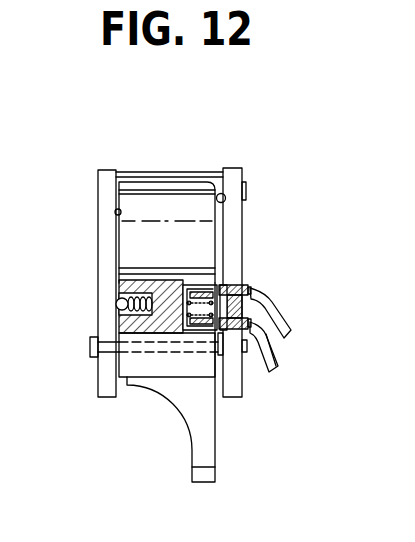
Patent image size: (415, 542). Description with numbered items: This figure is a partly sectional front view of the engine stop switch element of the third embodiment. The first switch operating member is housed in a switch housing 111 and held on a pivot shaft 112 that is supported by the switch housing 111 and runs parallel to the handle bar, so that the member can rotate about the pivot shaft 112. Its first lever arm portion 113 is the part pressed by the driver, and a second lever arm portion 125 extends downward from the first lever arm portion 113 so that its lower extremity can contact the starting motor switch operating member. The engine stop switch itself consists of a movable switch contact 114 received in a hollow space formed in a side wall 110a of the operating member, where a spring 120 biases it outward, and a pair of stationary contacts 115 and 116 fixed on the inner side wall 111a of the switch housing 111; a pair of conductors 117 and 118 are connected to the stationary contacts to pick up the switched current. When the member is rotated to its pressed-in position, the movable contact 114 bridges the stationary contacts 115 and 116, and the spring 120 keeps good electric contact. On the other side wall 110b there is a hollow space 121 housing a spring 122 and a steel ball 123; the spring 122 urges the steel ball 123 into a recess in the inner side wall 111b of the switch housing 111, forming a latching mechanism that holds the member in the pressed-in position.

The side wall of first switch operating member 110a is at (216, 231).
The other side wall of first switch operating member 110b is at (122, 278).
The switch housing 111 is at (160, 174).
The inner side wall of switch housing 111a is at (224, 196).
The inner side wall of switch housing 111b is at (115, 211).
The pivot shaft 112 is at (118, 366).
The first lever arm portion 113 is at (128, 250).
The movable switch contact 114 is at (228, 331).
The stationary contact 115 is at (243, 288).
The stationary contact 116 is at (262, 313).
The conductor 117 is at (285, 340).
The conductor 118 is at (273, 373).
The spring 120 is at (192, 320).
The hollow space 121 is at (124, 312).
The spring 122 is at (146, 292).
The steel ball 123 is at (116, 303).
The second lever arm portion 125 is at (205, 450).